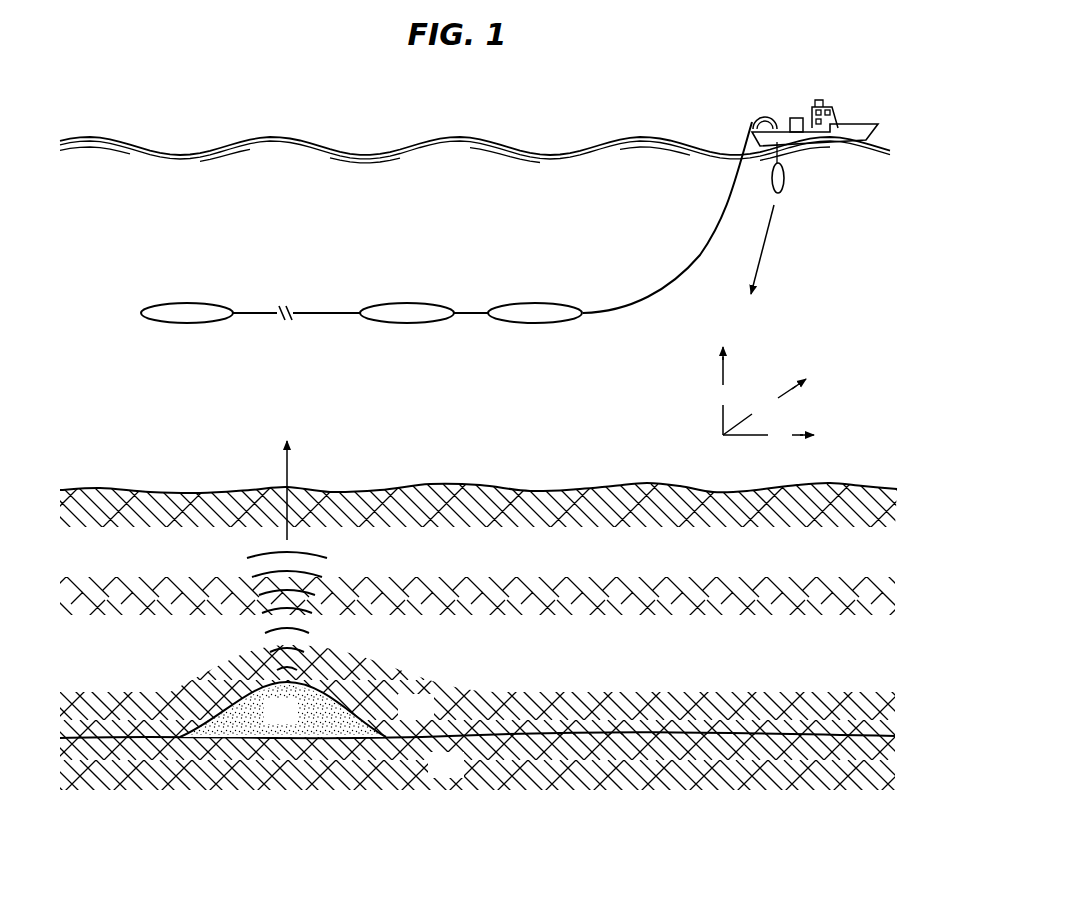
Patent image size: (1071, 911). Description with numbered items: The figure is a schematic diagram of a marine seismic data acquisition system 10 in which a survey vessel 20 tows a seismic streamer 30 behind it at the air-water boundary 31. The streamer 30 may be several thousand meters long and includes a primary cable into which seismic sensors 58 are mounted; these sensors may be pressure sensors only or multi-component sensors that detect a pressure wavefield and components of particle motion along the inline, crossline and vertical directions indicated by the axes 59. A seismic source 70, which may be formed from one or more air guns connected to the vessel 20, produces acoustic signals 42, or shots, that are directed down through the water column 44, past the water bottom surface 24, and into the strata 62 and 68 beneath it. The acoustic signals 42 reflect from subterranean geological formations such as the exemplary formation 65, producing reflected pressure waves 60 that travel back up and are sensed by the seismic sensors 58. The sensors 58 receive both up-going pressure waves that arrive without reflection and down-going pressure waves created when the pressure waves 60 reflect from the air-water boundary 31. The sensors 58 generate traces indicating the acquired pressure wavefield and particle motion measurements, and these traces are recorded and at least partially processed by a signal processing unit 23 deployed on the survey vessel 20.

The marine seismic data acquisition system 10 is at (228, 95).
The survey vessel 20 is at (866, 124).
The signal processing unit 23 is at (797, 117).
The air-water boundary 31 is at (428, 135).
The seismic streamer 30 is at (718, 221).
The seismic source 70 is at (782, 180).
The acoustic signal 42 is at (766, 238).
The seismic sensors 58 is at (165, 303).
The water column 44 is at (147, 400).
The water bottom surface 24 is at (462, 486).
The axes 59 is at (716, 441).
The pressure waves 60 is at (250, 634).
The strata 62 is at (402, 719).
The formation 65 is at (266, 721).
The strata 68 is at (432, 777).